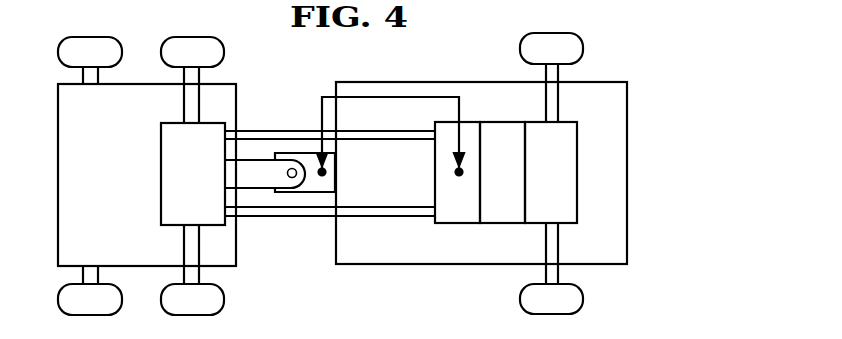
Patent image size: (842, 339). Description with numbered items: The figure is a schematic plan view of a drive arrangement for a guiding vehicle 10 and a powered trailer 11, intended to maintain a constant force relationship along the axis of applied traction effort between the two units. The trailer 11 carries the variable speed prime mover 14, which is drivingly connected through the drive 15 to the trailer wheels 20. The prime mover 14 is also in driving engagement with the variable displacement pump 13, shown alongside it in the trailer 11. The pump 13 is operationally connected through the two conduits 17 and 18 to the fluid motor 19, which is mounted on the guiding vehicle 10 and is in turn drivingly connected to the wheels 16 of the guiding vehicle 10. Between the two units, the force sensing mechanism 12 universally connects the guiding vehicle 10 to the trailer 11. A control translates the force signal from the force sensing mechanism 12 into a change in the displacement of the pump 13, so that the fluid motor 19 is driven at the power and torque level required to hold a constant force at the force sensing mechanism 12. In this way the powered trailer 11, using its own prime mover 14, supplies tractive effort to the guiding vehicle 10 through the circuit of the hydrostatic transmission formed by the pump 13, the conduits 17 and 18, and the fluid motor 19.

The guiding vehicle 10 is at (58, 223).
The trailer 11 is at (437, 267).
The force sensing mechanism 12 is at (330, 183).
The variable displacement pump 13 is at (453, 212).
The variable speed prime mover 14 is at (503, 212).
The drive 15 is at (560, 210).
The wheels of the guiding vehicle 16 is at (208, 42).
The conduit 17 is at (267, 132).
The conduit 18 is at (289, 218).
The fluid motor 19 is at (166, 183).
The wheels 20 is at (573, 43).